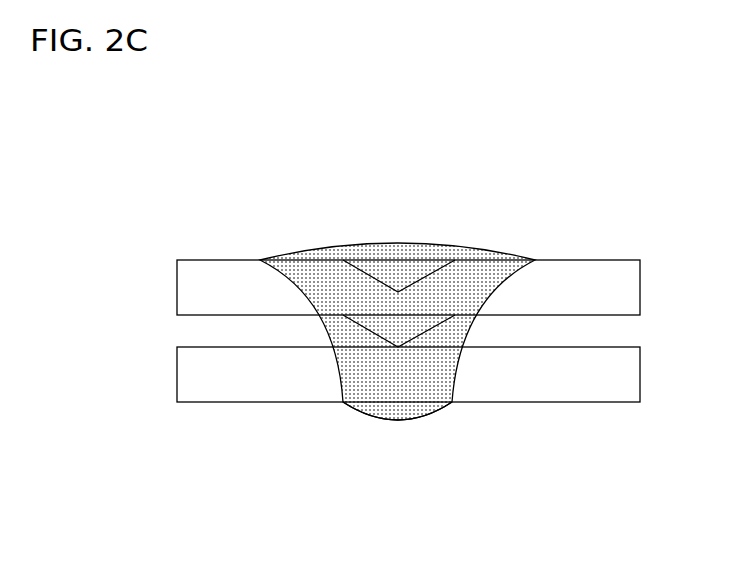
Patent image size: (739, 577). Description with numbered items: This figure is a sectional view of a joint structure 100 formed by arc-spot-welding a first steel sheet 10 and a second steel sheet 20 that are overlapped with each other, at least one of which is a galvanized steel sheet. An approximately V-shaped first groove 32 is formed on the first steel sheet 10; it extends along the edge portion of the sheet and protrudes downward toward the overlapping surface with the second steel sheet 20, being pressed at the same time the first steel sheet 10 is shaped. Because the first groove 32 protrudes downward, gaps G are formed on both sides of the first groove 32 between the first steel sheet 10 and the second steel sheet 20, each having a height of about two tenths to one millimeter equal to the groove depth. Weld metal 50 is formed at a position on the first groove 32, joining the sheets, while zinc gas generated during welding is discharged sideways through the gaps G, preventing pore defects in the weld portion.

The joint structure 100 is at (623, 187).
The first steel sheet 10 is at (615, 297).
The second steel sheet 20 is at (615, 378).
The first groove 32 is at (385, 283).
The weld metal 50 is at (427, 432).
The gaps G is at (267, 333).